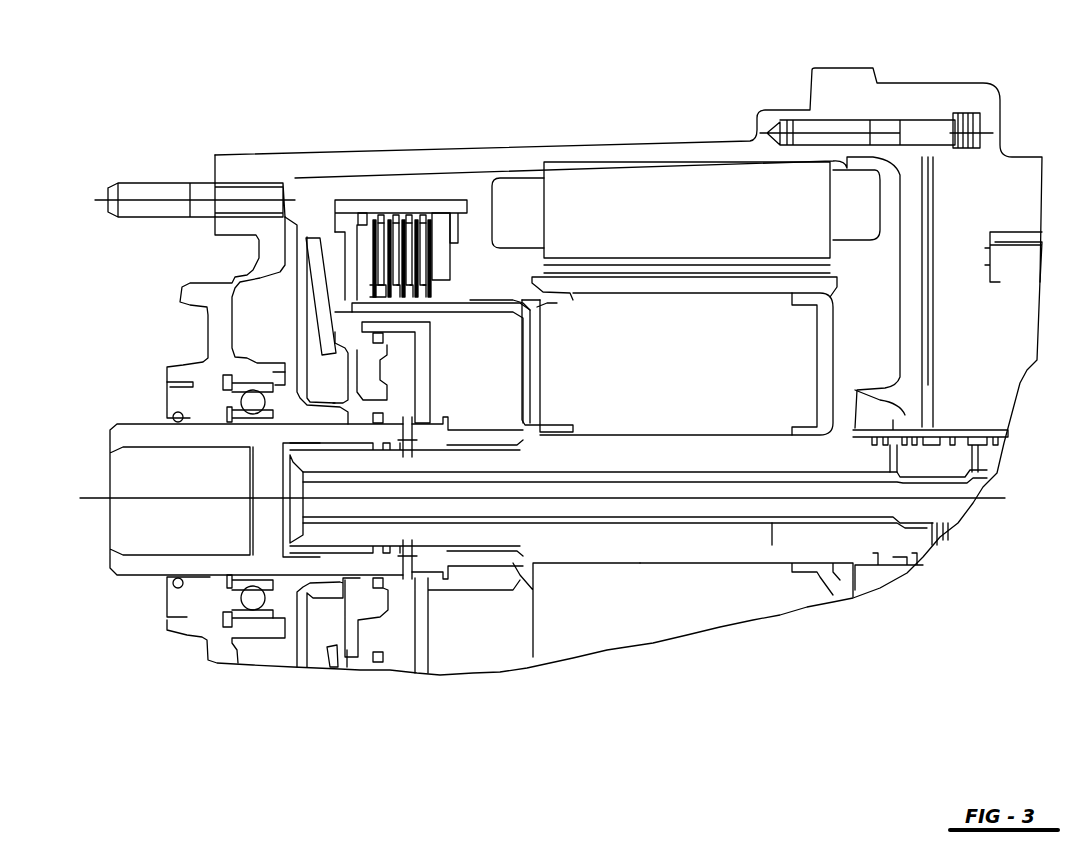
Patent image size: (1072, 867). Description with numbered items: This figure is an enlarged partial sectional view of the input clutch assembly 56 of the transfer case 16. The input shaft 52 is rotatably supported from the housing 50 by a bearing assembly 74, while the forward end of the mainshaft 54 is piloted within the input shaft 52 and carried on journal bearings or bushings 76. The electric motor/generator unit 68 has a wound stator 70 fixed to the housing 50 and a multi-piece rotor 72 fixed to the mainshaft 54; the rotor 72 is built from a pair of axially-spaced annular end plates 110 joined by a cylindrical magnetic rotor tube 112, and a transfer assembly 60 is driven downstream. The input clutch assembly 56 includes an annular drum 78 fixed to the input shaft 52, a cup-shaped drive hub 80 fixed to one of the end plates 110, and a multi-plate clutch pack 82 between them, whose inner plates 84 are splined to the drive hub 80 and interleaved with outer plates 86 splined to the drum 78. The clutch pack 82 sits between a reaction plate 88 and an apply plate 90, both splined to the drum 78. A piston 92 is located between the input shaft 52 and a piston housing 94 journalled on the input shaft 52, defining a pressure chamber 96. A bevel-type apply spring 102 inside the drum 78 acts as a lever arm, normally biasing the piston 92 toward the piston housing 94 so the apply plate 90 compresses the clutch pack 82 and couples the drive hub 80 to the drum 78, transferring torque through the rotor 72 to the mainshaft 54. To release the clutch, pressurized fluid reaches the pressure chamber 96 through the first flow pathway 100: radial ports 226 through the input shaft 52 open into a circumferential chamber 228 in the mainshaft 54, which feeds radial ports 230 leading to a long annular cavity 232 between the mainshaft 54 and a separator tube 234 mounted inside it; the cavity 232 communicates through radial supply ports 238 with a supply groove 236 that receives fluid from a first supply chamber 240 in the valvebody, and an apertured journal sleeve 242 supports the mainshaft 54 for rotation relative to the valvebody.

The transfer case 16 is at (605, 80).
The housing 50 is at (245, 170).
The input shaft 52 is at (132, 435).
The mainshaft 54 is at (640, 455).
The input clutch assembly 56 is at (437, 195).
The transfer assembly 60 is at (1012, 222).
The electric motor/generator unit 68 is at (680, 178).
The stator 70 is at (706, 197).
The rotor 72 is at (813, 361).
The bearing assembly 74 is at (250, 602).
The journal bearings or bushings 76 is at (510, 443).
The annular drum 78 is at (360, 207).
The drive hub 80 is at (462, 300).
The multi-plate clutch pack 82 is at (413, 215).
The inner plates 84 is at (430, 287).
The outer plates 86 is at (437, 195).
The reaction plate 88 is at (437, 250).
The apply plate 90 is at (345, 255).
The piston 92 is at (355, 665).
The piston housing 94 is at (423, 367).
The pressure chamber 96 is at (400, 655).
The first flow pathway 100 is at (437, 477).
The bevel-type apply spring 102 is at (325, 307).
The annular end plates 110 is at (540, 365).
The cylindrical magnetic rotor tube 112 is at (732, 290).
The radial ports 226 is at (408, 437).
The circumferential chamber 228 is at (405, 555).
The radial ports 230 is at (397, 470).
The annular cavity 232 is at (640, 522).
The separator tube 234 is at (773, 520).
The supply groove 236 is at (893, 557).
The radial supply ports 238 is at (885, 455).
The first supply chamber 240 is at (820, 400).
The apertured journal bearing or sleeve 242 is at (947, 430).